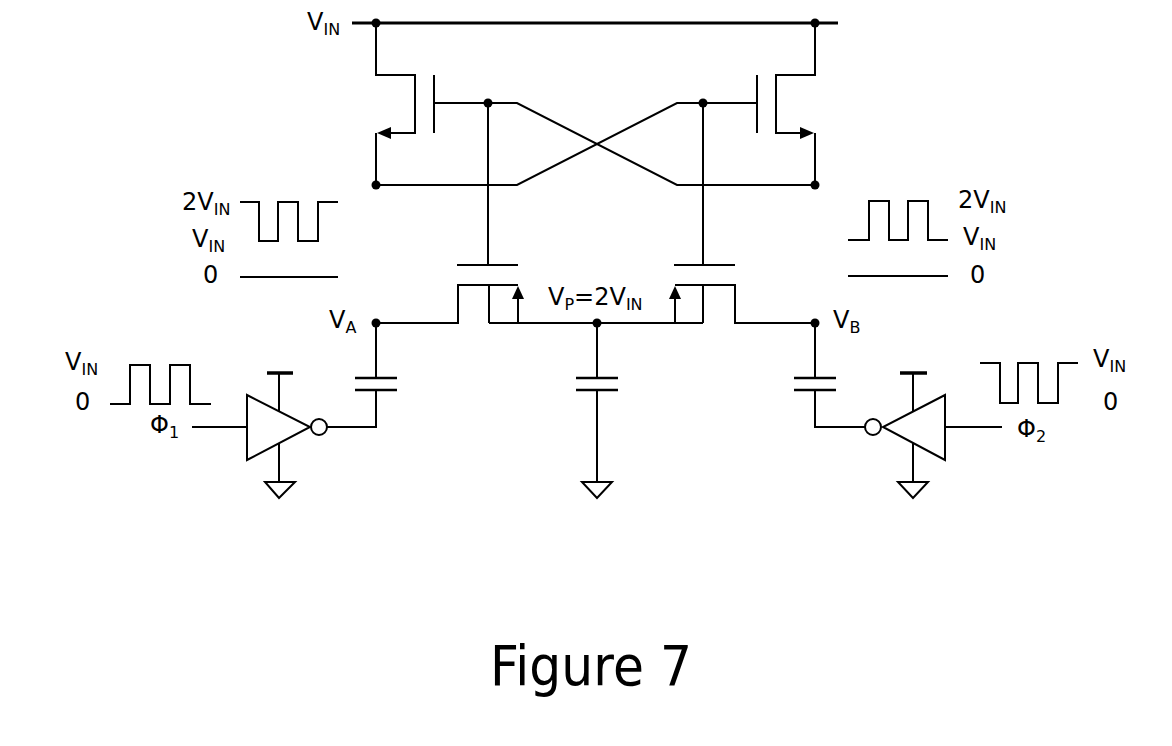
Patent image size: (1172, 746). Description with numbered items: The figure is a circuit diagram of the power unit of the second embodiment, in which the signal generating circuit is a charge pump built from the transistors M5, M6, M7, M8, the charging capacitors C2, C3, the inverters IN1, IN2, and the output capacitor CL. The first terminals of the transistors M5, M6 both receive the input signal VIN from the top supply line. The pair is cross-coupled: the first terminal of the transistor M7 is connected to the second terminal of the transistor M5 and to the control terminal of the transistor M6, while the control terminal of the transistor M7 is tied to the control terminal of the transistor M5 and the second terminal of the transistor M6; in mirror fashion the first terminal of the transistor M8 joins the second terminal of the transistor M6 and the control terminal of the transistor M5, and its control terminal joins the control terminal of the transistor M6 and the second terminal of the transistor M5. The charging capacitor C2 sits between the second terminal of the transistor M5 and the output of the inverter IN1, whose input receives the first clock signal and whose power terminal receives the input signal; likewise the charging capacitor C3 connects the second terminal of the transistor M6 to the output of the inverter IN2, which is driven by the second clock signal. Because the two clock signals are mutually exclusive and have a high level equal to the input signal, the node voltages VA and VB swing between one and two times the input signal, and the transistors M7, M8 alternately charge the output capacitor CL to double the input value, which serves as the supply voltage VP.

The transistor M5 is at (415, 104).
The transistor M6 is at (776, 104).
The transistor M7 is at (486, 313).
The transistor M8 is at (706, 313).
The charging capacitor C2 is at (379, 375).
The charging capacitor C3 is at (812, 375).
The output capacitor CL is at (616, 410).
The inverter IN1 is at (292, 440).
The inverter IN2 is at (900, 440).